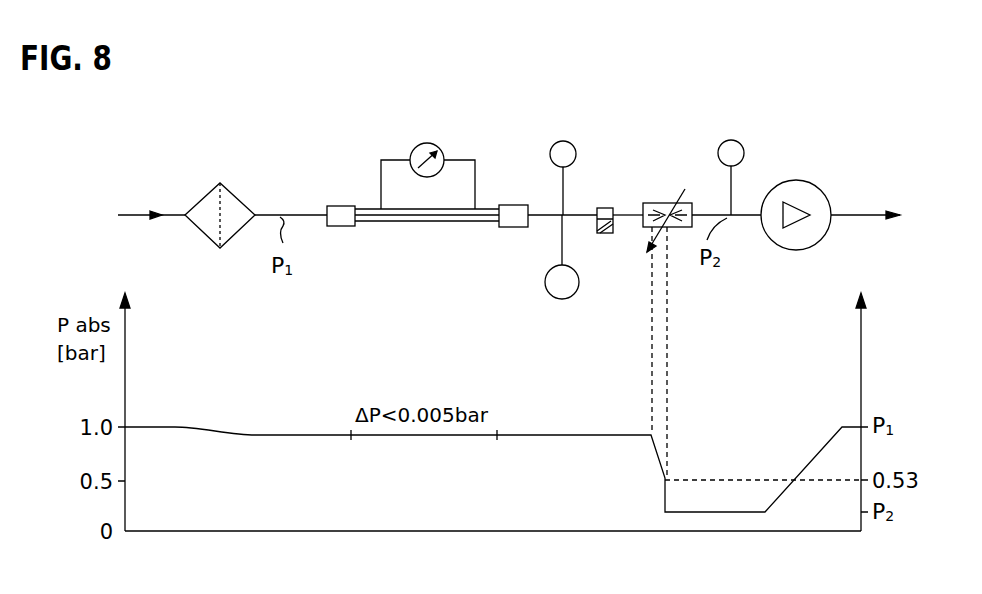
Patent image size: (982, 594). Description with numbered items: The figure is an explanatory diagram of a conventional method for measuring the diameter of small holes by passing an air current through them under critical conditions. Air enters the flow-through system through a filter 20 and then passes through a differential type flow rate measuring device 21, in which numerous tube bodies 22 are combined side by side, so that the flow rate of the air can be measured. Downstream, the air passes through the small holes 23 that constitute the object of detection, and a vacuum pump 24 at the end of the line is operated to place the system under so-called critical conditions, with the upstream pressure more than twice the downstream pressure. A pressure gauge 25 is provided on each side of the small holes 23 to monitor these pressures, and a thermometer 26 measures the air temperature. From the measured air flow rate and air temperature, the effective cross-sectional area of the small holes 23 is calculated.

The filter 20 is at (218, 221).
The differential type flow rate measuring device 21 is at (442, 141).
The tube bodies 22 is at (438, 223).
The small holes 23 is at (664, 203).
The vacuum pump 24 is at (820, 187).
The pressure gauge 25 is at (568, 140).
The thermometer 26 is at (563, 299).